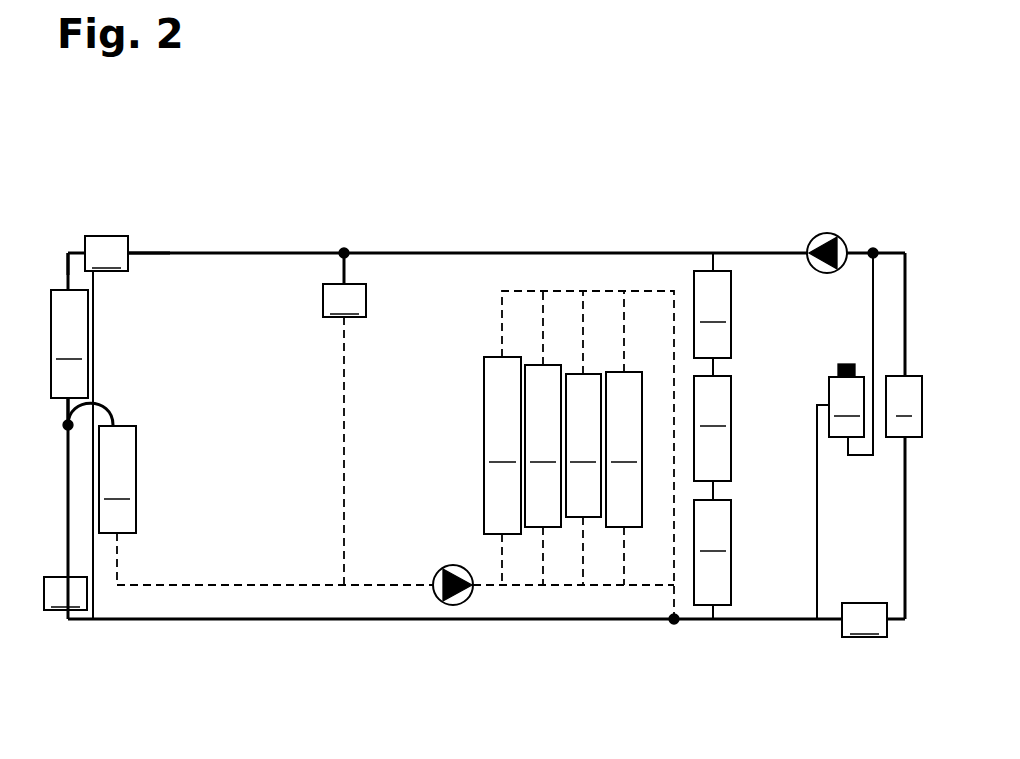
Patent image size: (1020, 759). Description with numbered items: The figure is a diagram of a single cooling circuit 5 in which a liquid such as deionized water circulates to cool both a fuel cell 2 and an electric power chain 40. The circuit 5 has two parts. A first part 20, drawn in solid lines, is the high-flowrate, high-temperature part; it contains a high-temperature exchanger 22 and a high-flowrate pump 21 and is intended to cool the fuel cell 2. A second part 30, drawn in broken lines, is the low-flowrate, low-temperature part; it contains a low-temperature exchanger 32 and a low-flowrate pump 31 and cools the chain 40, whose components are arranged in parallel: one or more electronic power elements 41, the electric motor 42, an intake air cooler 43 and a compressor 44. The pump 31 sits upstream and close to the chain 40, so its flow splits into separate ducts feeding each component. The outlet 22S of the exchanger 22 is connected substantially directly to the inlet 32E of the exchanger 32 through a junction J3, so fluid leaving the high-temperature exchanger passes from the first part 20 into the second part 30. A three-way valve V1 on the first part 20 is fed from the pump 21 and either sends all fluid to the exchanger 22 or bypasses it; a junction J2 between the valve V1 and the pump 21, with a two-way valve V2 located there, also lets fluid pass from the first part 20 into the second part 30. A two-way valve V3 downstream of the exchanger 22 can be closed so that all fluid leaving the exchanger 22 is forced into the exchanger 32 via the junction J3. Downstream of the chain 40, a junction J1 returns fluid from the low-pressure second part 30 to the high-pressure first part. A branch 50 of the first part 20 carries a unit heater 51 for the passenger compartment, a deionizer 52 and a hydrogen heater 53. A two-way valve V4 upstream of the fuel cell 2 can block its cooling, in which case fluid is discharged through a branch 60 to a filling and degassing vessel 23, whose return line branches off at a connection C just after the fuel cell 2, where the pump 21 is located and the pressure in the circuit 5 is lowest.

The fuel cell 2 is at (904, 406).
The cooling circuit 5 is at (440, 210).
The first part 20 is at (262, 250).
The high-flowrate pump 21 is at (822, 240).
The high-temperature exchanger 22 is at (69, 344).
The outlet 22S is at (66, 408).
The cooling fluid filling and degassing vessel 23 is at (846, 400).
The second part 30 is at (243, 590).
The low-flowrate pump 31 is at (453, 605).
The low-temperature exchanger 32 is at (117, 479).
The inlet 32E is at (110, 403).
The electric power chain 40 is at (531, 283).
The electronic power elements 41 is at (502, 445).
The electric motor 42 is at (543, 446).
The intake air cooler 43 is at (583, 445).
The compressor 44 is at (624, 449).
The branch 50 is at (738, 336).
The unit heater 51 is at (712, 314).
The deionizer 52 is at (712, 428).
The hydrogen heater 53 is at (712, 552).
The branch 60 is at (817, 572).
The connection C is at (873, 250).
The junction J1 is at (674, 624).
The junction J2 is at (344, 250).
The junction J3 is at (63, 426).
The three-way valve V1 is at (98, 253).
The two-way valve V2 is at (344, 285).
The two-way valve V3 is at (65, 593).
The two-way valve V4 is at (864, 620).